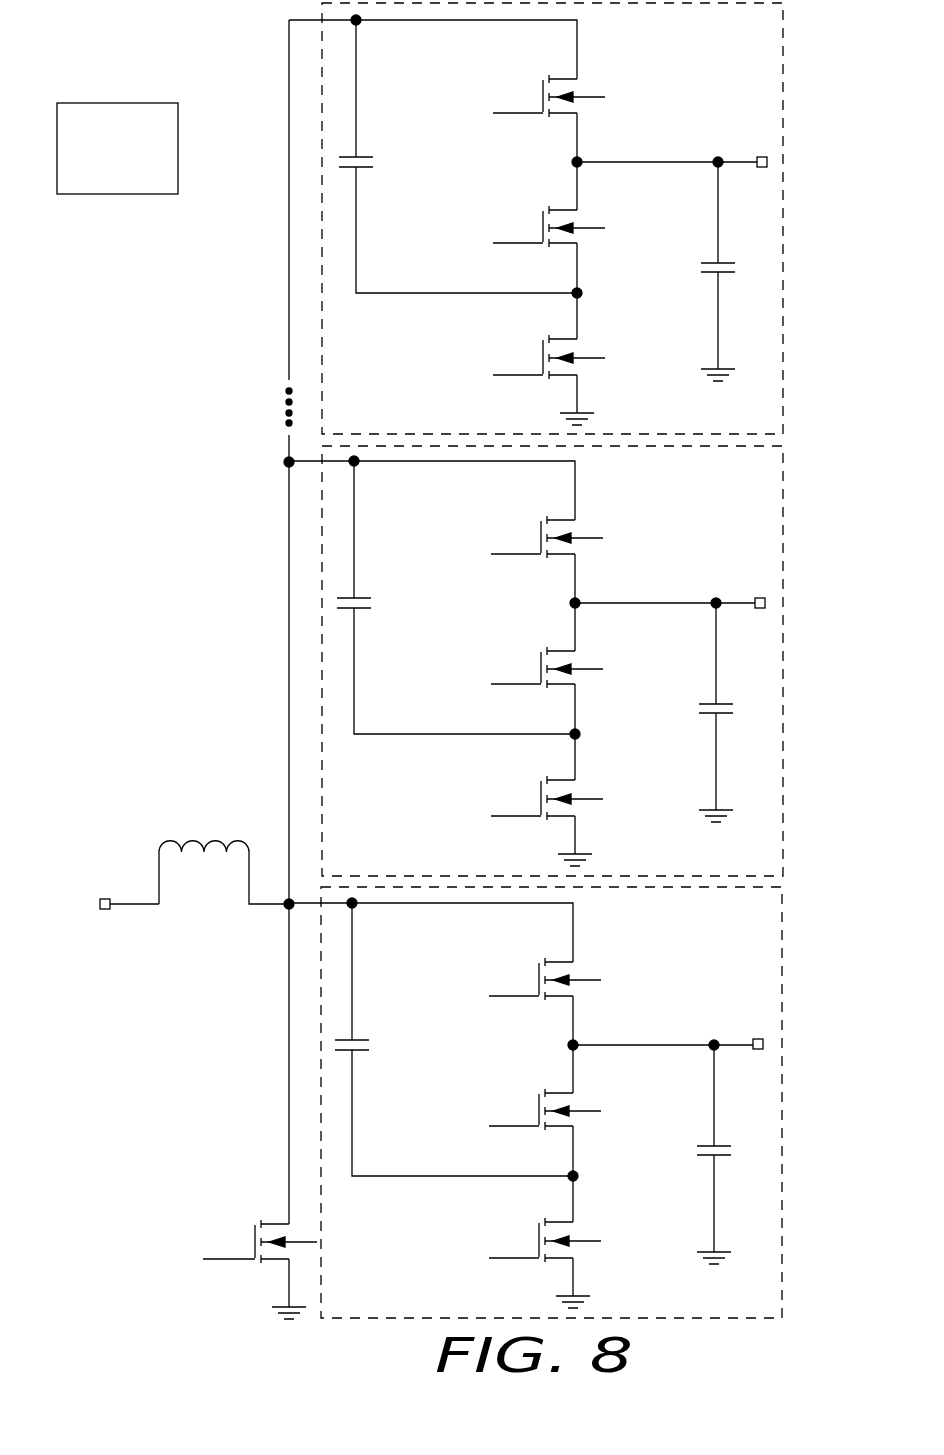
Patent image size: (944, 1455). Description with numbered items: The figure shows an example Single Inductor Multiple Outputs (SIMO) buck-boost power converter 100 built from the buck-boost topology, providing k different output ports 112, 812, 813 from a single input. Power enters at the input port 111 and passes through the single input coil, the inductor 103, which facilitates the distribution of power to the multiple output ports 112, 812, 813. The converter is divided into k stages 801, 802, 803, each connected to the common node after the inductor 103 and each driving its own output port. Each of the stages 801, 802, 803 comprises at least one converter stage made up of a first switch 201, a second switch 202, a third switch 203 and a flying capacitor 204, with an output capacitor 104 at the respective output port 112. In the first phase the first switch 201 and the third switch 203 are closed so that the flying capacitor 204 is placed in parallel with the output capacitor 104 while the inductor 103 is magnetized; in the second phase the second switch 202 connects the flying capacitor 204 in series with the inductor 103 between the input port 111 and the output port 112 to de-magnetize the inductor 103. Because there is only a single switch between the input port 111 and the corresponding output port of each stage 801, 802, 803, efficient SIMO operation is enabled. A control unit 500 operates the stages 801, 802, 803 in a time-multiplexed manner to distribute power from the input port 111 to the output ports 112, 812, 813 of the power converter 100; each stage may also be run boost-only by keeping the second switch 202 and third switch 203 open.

The power converter 100 is at (175, 337).
The inductor 103 is at (206, 892).
The output capacitor 104 is at (703, 263).
The input port 111 is at (105, 910).
The output port 112 is at (762, 168).
The first switch 201 is at (592, 89).
The second switch 202 is at (592, 221).
The third switch 203 is at (592, 351).
The flying capacitor 204 is at (377, 160).
The control unit 500 is at (128, 195).
The first stage 801 is at (580, 218).
The second stage 802 is at (580, 661).
The third stage 803 is at (579, 1102).
The second output port 812 is at (760, 609).
The third output port 813 is at (758, 1050).